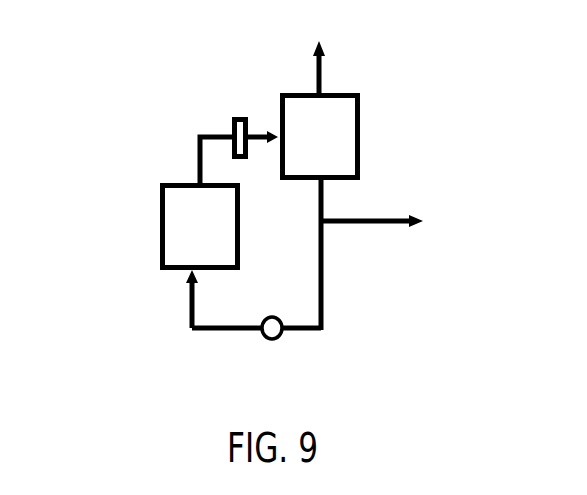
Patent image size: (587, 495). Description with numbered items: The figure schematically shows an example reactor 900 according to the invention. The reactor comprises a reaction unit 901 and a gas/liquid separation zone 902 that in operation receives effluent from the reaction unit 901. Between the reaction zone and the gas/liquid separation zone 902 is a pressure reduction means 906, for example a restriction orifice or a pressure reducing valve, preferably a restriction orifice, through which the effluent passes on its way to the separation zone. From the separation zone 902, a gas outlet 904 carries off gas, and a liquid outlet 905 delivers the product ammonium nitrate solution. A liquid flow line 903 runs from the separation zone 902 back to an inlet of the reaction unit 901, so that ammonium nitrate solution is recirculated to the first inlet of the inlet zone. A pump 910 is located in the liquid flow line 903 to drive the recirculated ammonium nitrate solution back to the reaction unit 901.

The reactor 900 is at (140, 163).
The reaction unit 901 is at (160, 232).
The gas/liquid separation zone 902 is at (360, 110).
The liquid flow line 903 is at (323, 267).
The gas outlet 904 is at (318, 73).
The liquid outlet 905 is at (392, 218).
The pressure reduction means 906 is at (245, 117).
The pump 910 is at (278, 334).